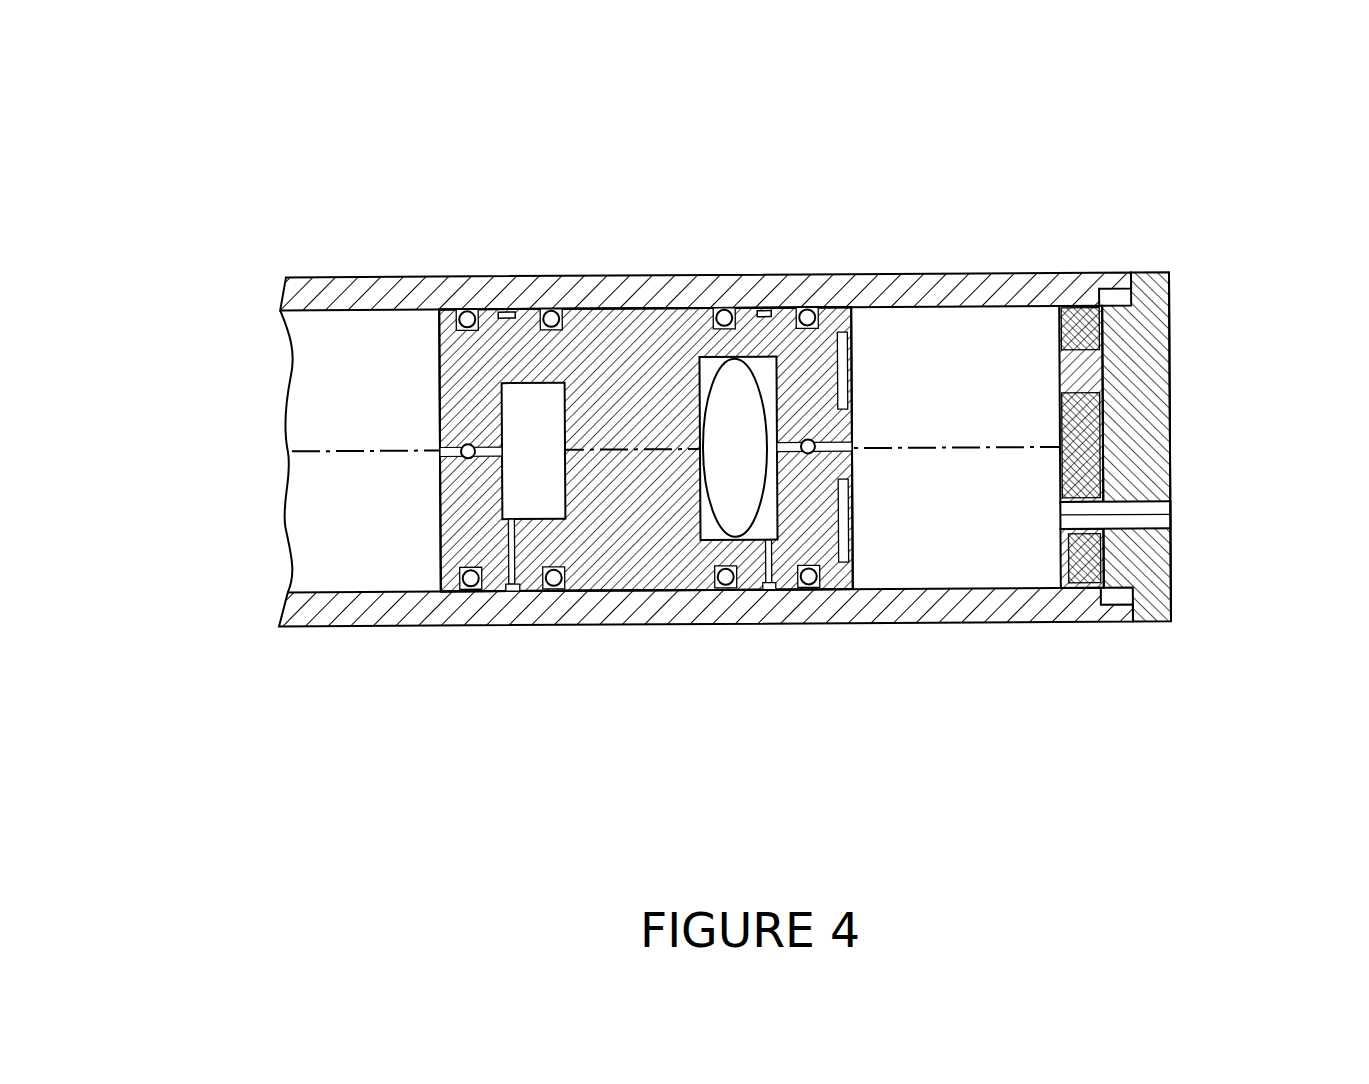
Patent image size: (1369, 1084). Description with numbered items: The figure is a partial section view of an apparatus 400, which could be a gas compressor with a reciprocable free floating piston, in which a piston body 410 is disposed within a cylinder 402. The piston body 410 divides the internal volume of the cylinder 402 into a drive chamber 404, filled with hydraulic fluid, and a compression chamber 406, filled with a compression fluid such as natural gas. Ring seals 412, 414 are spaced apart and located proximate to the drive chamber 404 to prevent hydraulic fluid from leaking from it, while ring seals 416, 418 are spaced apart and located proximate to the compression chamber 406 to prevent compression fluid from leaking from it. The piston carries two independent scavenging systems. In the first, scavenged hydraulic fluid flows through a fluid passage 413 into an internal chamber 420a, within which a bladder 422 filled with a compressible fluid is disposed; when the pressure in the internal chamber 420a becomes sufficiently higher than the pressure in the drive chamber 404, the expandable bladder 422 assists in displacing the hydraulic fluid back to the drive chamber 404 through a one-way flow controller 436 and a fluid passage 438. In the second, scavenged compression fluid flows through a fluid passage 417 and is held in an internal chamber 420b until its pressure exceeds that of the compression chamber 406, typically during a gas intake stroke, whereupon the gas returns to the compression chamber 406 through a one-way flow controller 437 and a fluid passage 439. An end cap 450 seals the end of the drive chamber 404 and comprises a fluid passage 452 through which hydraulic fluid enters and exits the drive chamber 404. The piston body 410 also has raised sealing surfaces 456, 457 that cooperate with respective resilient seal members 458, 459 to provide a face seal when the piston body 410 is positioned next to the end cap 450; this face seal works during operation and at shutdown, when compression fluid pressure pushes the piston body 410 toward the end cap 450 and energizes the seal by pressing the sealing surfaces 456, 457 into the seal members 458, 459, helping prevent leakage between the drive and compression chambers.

The apparatus 400 is at (262, 160).
The cylinder 402 is at (313, 612).
The drive chamber 404 is at (997, 405).
The compression chamber 406 is at (403, 527).
The piston body 410 is at (640, 350).
The ring seal 412 is at (812, 310).
The fluid passage 413 is at (700, 590).
The ring seal 414 is at (727, 310).
The ring seal 416 is at (468, 310).
The fluid passage 417 is at (511, 588).
The ring seal 418 is at (554, 310).
The internal chamber 420a is at (767, 517).
The internal chamber 420b is at (520, 490).
The bladder 422 is at (717, 492).
The one-way flow controller 436 is at (808, 440).
The one-way flow controller 437 is at (465, 445).
The fluid passage 438 is at (852, 440).
The fluid passage 439 is at (440, 435).
The end cap 450 is at (1172, 308).
The fluid passage 452 is at (1150, 527).
The raised sealing surface 456 is at (853, 572).
The raised sealing surface 457 is at (853, 462).
The resilient seal member 458 is at (1132, 270).
The resilient seal member 459 is at (1095, 431).